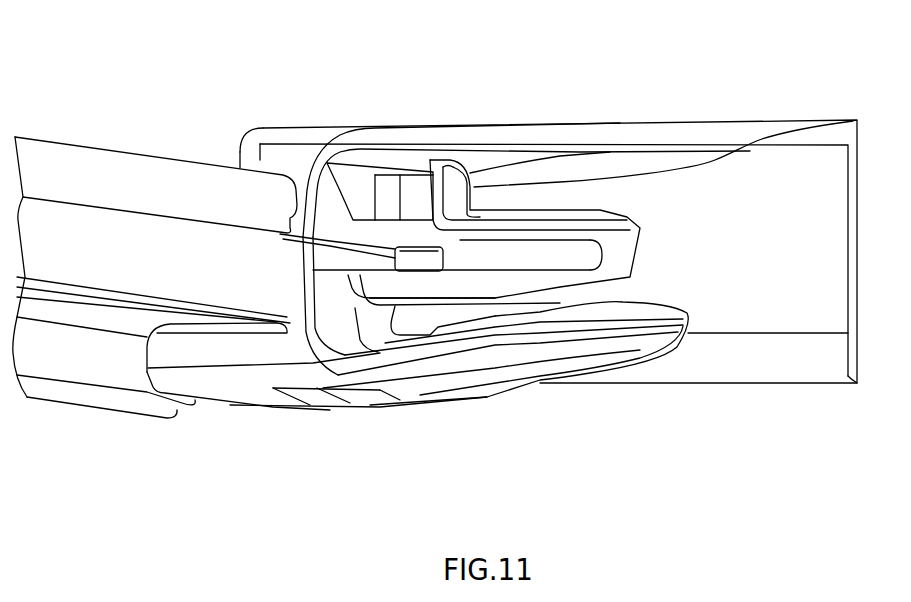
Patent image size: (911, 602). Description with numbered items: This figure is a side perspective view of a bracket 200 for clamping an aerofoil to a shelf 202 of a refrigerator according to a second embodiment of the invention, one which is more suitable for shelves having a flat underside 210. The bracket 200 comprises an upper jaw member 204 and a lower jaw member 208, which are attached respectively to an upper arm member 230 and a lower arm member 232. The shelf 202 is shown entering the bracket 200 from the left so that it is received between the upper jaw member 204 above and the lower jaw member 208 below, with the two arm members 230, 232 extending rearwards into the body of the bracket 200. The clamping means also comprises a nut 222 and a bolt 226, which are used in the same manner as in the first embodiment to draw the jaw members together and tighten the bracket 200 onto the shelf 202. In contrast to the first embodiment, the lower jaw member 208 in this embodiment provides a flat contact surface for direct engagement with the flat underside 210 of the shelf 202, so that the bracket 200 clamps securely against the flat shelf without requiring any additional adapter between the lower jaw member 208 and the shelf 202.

The bracket 200 is at (440, 133).
The shelf 202 is at (88, 172).
The upper jaw member 204 is at (284, 133).
The lower jaw member 208 is at (242, 377).
The flat underside 210 is at (88, 312).
The nut 222 is at (413, 193).
The bolt 226 is at (423, 260).
The upper arm member 230 is at (550, 207).
The lower arm member 232 is at (517, 310).